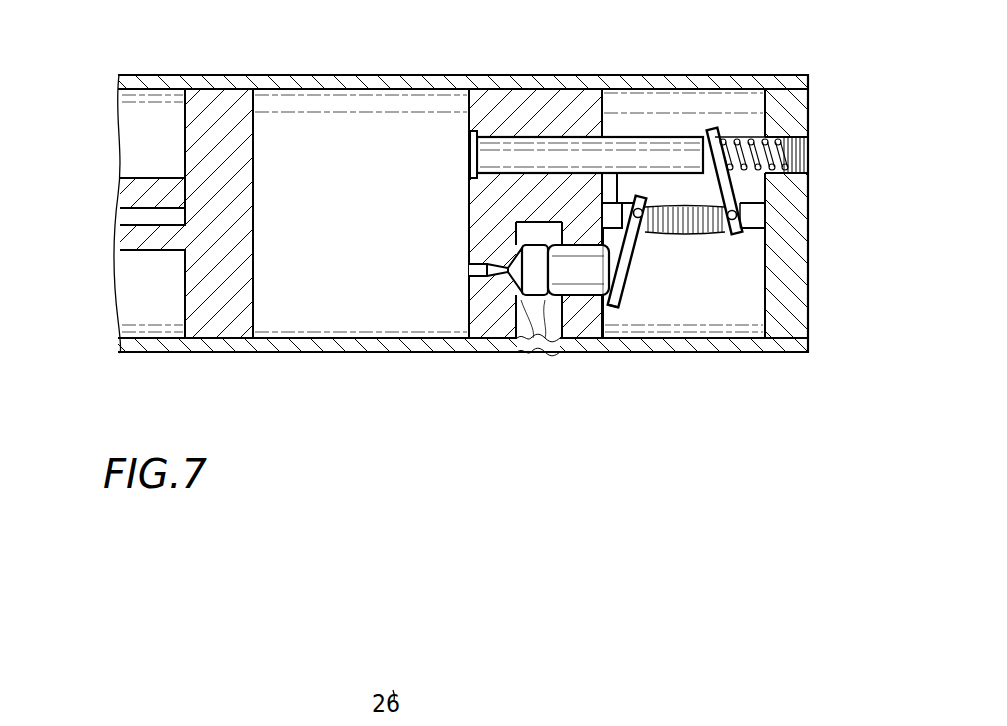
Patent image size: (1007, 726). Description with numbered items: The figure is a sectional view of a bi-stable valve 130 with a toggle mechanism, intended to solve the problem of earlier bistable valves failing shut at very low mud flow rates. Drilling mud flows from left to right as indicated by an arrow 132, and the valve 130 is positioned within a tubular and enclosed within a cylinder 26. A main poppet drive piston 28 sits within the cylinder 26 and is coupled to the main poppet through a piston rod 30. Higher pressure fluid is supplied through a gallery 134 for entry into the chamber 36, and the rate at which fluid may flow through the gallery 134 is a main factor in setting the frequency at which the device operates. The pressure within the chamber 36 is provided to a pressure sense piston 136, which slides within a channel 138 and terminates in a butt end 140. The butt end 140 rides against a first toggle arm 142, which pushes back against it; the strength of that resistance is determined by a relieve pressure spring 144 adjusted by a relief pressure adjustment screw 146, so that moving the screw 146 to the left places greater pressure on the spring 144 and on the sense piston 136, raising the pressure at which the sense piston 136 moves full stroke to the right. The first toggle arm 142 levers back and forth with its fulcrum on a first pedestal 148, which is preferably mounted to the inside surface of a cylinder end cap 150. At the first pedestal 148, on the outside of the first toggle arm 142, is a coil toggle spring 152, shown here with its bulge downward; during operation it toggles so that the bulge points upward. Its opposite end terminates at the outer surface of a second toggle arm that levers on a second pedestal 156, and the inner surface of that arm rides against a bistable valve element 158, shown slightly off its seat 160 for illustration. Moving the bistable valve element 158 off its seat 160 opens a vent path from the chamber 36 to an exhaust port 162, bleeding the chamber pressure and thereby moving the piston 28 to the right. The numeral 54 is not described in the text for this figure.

The cylinder 26 is at (323, 355).
The main poppet drive piston 28 is at (238, 141).
The piston rod 30 is at (151, 178).
The chamber 36 is at (373, 244).
The valve actuating lever end 54 is at (623, 306).
The valve 130 is at (377, 413).
The arrow 132 is at (108, 215).
The gallery 134 is at (150, 213).
The pressure sense piston 136 is at (470, 153).
The channel 138 is at (523, 150).
The butt end 140 is at (672, 238).
The first toggle arm 142 is at (713, 127).
The relieve pressure spring 144 is at (753, 135).
The relief pressure adjustment screw 146 is at (806, 152).
The first pedestal 148 is at (758, 214).
The cylinder end cap 150 is at (793, 297).
The toggle spring 152 is at (713, 238).
The second pedestal 156 is at (612, 200).
The bistable valve element 158 is at (545, 296).
The seat 160 is at (508, 292).
The exhaust port 162 is at (533, 330).